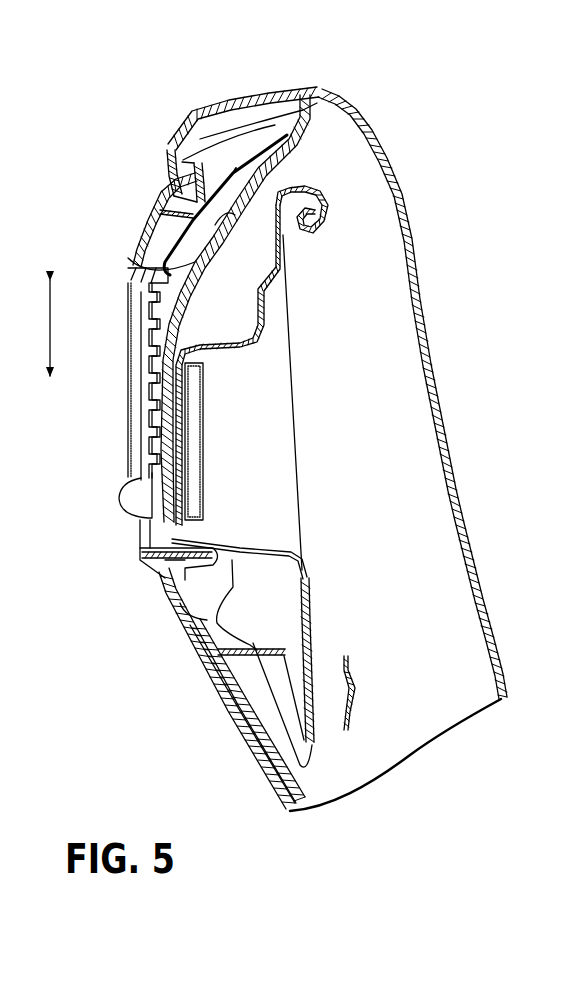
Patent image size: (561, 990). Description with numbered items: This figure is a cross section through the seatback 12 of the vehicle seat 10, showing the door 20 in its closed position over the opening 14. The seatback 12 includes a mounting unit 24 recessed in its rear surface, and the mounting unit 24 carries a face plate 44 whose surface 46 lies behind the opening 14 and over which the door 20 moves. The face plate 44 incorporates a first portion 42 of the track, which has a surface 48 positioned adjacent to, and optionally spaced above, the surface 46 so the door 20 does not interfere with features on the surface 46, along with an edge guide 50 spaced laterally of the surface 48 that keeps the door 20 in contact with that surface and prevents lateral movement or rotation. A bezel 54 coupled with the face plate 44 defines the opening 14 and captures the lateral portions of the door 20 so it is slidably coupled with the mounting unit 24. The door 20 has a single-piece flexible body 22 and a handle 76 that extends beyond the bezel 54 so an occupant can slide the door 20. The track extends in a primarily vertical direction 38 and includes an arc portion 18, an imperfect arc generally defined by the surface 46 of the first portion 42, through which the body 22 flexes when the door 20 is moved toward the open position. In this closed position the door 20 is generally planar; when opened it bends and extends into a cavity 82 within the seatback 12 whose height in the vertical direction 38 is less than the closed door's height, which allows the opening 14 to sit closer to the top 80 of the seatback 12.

The vehicle seat 10 is at (94, 140).
The seatback 12 is at (427, 149).
The opening 14 is at (119, 311).
The arc portion 18 is at (225, 205).
The door 20 is at (126, 378).
The flexible body 22 is at (141, 402).
The mounting unit 24 is at (313, 553).
The vertical direction 38 is at (52, 322).
The first portion of track 42 is at (205, 247).
The face plate 44 is at (183, 630).
The surface 46 is at (188, 345).
The surface of first track portion 48 is at (225, 214).
The edge guide 50 is at (130, 268).
The bezel 54 is at (133, 548).
The handle 76 is at (121, 493).
The top of seatback 80 is at (231, 105).
The cavity 82 is at (210, 159).